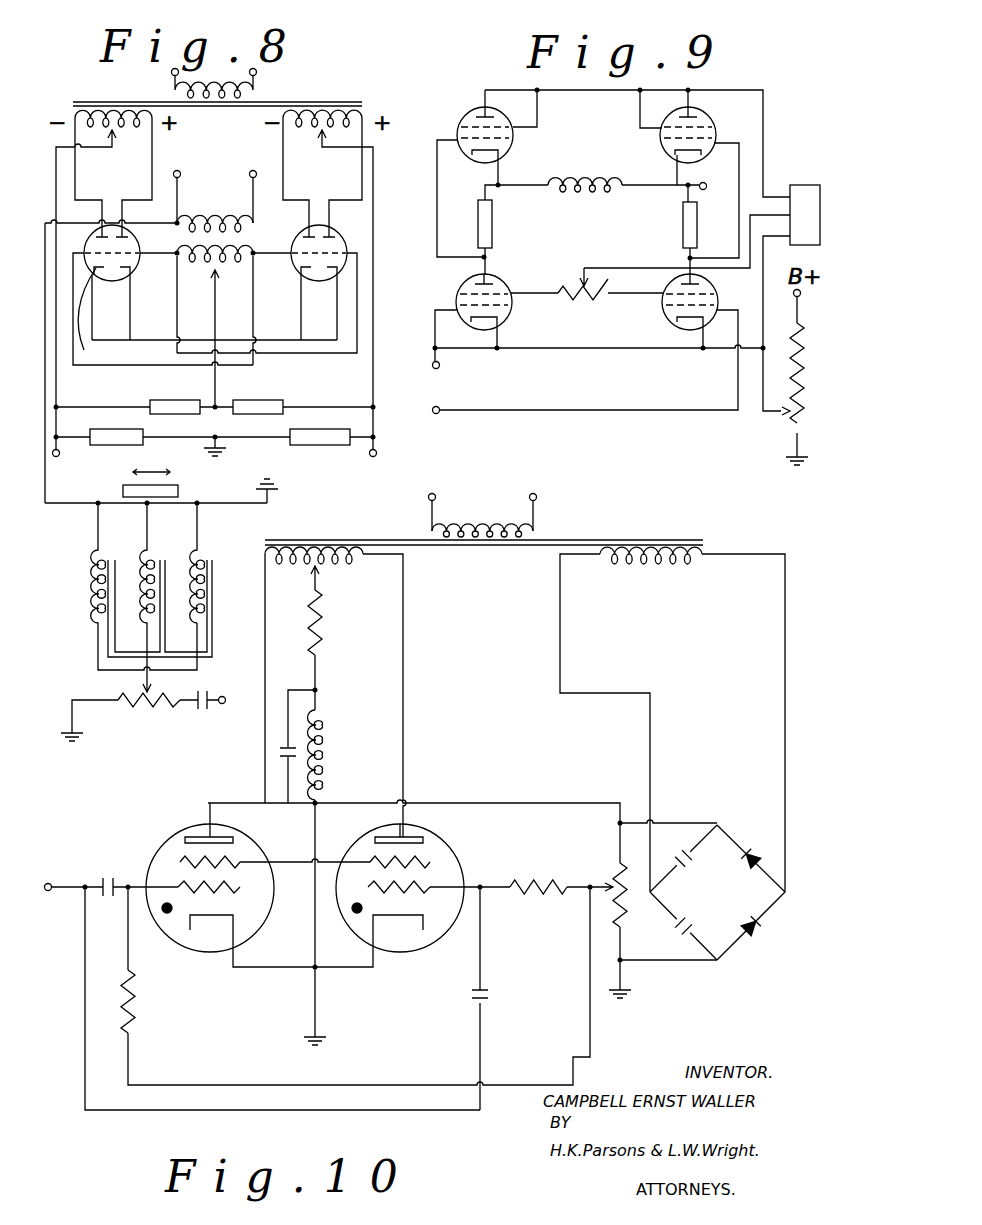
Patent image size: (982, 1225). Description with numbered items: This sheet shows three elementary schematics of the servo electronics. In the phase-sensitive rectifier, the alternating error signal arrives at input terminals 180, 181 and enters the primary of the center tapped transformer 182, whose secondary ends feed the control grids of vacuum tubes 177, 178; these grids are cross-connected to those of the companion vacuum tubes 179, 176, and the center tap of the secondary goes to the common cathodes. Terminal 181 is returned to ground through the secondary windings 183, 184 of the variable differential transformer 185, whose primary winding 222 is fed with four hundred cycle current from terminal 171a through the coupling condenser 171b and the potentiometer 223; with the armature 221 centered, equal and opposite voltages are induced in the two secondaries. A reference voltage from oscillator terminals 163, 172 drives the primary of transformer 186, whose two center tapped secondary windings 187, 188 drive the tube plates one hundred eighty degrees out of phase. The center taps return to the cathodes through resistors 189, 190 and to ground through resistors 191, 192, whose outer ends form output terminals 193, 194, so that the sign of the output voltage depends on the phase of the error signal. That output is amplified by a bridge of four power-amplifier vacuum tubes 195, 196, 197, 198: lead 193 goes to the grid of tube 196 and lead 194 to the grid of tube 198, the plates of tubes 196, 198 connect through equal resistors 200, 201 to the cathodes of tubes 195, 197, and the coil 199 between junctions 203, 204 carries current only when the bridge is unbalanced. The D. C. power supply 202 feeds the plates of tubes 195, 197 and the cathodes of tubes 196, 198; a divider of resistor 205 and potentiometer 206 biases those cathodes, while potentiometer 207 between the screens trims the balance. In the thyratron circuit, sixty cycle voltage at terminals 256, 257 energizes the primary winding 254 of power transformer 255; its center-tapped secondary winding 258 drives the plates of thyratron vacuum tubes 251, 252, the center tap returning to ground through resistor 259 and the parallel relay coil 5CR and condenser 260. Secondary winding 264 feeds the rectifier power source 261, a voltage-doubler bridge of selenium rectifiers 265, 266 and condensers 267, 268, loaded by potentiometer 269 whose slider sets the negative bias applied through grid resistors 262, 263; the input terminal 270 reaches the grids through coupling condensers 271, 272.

In FIG. 8, the oscillator output terminal 172 is at (185, 84).
In FIG. 8, the oscillator output terminal 163 is at (258, 72).
In FIG. 8, the transformer 186 is at (276, 98).
In FIG. 8, the center tapped secondary winding 187 is at (92, 93).
In FIG. 8, the center tapped secondary winding 188 is at (340, 101).
In FIG. 8, the input terminal 181 is at (178, 186).
In FIG. 8, the input terminal 180 is at (252, 186).
In FIG. 8, the center tapped transformer 182 is at (245, 240).
In FIG. 8, the vacuum tube 179 is at (334, 246).
In FIG. 8, the vacuum tube 177 is at (126, 280).
In FIG. 8, the vacuum tube 178 is at (292, 272).
In FIG. 8, the vacuum tube 176 is at (101, 318).
In FIG. 8, the resistor 189 is at (175, 394).
In FIG. 8, the resistor 190 is at (262, 394).
In FIG. 8, the resistor 191 is at (108, 446).
In FIG. 8, the resistor 192 is at (292, 447).
In FIG. 8, the variable differential transformer 185 is at (210, 489).
In FIG. 8, the output terminal 193 is at (78, 464).
In FIG. 9, the output terminal 193 is at (432, 366).
In FIG. 8, the output terminal 194 is at (377, 456).
In FIG. 9, the output terminal 194 is at (432, 411).
In FIG. 8, the armature 221 is at (123, 492).
In FIG. 8, the secondary winding 183 is at (90, 550).
In FIG. 8, the primary winding 222 is at (138, 549).
In FIG. 8, the secondary winding 184 is at (219, 537).
In FIG. 8, the potentiometer 223 is at (118, 704).
In FIG. 8, the terminal 171a is at (222, 705).
In FIG. 8, the coupling condenser 171b is at (198, 714).
In FIG. 9, the power-amplifier vacuum tube 195 is at (513, 143).
In FIG. 9, the power-amplifier vacuum tube 196 is at (500, 276).
In FIG. 9, the power-amplifier vacuum tube 197 is at (661, 144).
In FIG. 9, the power-amplifier vacuum tube 198 is at (668, 319).
In FIG. 9, the coil 199 is at (582, 196).
In FIG. 9, the resistor 200 is at (492, 229).
In FIG. 9, the resistor 201 is at (683, 231).
In FIG. 9, the D. C. power supply 202 is at (806, 186).
In FIG. 9, the junction 203 is at (500, 184).
In FIG. 9, the junction 204 is at (666, 186).
In FIG. 9, the resistor 205 is at (788, 364).
In FIG. 9, the potentiometer 206 is at (795, 425).
In FIG. 9, the potentiometer 207 is at (582, 300).
In FIG. 9, the input terminal 270 is at (719, 176).
In FIG. 10, the input terminal 270 is at (48, 892).
In FIG. 10, the terminal 256 is at (428, 498).
In FIG. 10, the terminal 257 is at (538, 497).
In FIG. 10, the primary winding 254 is at (535, 531).
In FIG. 10, the power transformer 255 is at (473, 615).
In FIG. 10, the secondary winding 264 is at (647, 584).
In FIG. 10, the center-tapped secondary winding 258 is at (341, 622).
In FIG. 10, the resistor 259 is at (325, 646).
In FIG. 10, the relay coil 5CR is at (341, 755).
In FIG. 10, the condenser 260 is at (283, 759).
In FIG. 10, the thyratron vacuum tube 251 is at (193, 951).
In FIG. 10, the thyratron vacuum tube 252 is at (458, 856).
In FIG. 10, the coupling condenser 271 is at (107, 877).
In FIG. 10, the grid resistor 262 is at (136, 1015).
In FIG. 10, the grid resistor 263 is at (541, 901).
In FIG. 10, the coupling condenser 272 is at (468, 998).
In FIG. 10, the potentiometer 269 is at (612, 926).
In FIG. 10, the rectifier power source 261 is at (721, 792).
In FIG. 10, the condenser 267 is at (702, 874).
In FIG. 10, the condenser 268 is at (690, 915).
In FIG. 10, the selenium rectifier 266 is at (741, 850).
In FIG. 10, the selenium rectifier 265 is at (752, 929).